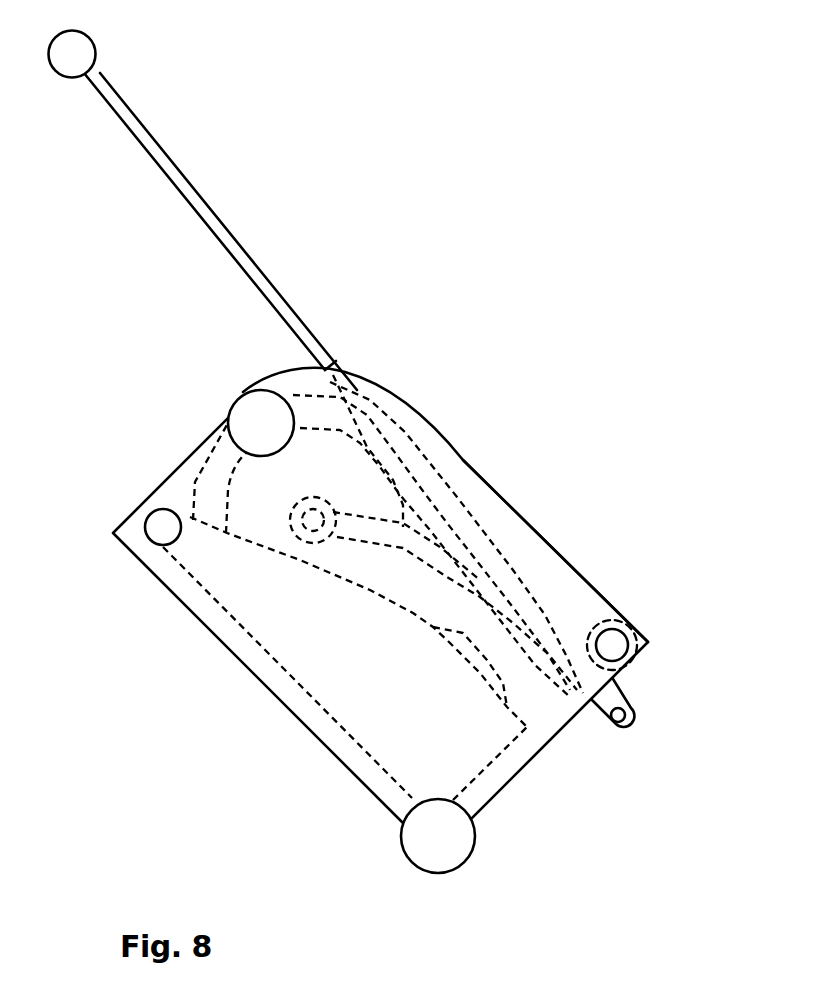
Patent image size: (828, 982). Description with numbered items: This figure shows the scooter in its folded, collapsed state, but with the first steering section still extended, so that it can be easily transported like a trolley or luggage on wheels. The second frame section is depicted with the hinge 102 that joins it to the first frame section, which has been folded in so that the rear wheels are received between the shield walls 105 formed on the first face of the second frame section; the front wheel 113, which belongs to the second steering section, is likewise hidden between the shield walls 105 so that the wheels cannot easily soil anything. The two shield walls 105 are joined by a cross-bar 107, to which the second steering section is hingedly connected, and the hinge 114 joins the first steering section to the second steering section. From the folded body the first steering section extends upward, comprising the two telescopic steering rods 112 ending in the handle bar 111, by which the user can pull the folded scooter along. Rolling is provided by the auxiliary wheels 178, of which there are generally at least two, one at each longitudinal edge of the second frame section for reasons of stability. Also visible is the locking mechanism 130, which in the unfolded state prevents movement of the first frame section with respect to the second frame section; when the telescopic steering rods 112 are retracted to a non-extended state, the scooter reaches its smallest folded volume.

The hinge 102 is at (160, 527).
The shield walls 105 is at (570, 590).
The cross-bar 107 is at (612, 645).
The handle bar 111 is at (70, 52).
The telescopic steering rods 112 is at (208, 225).
The front wheel 113 is at (220, 470).
The hinge 114 is at (619, 722).
The locking mechanism 130 is at (216, 390).
The auxiliary wheels 178 is at (438, 852).